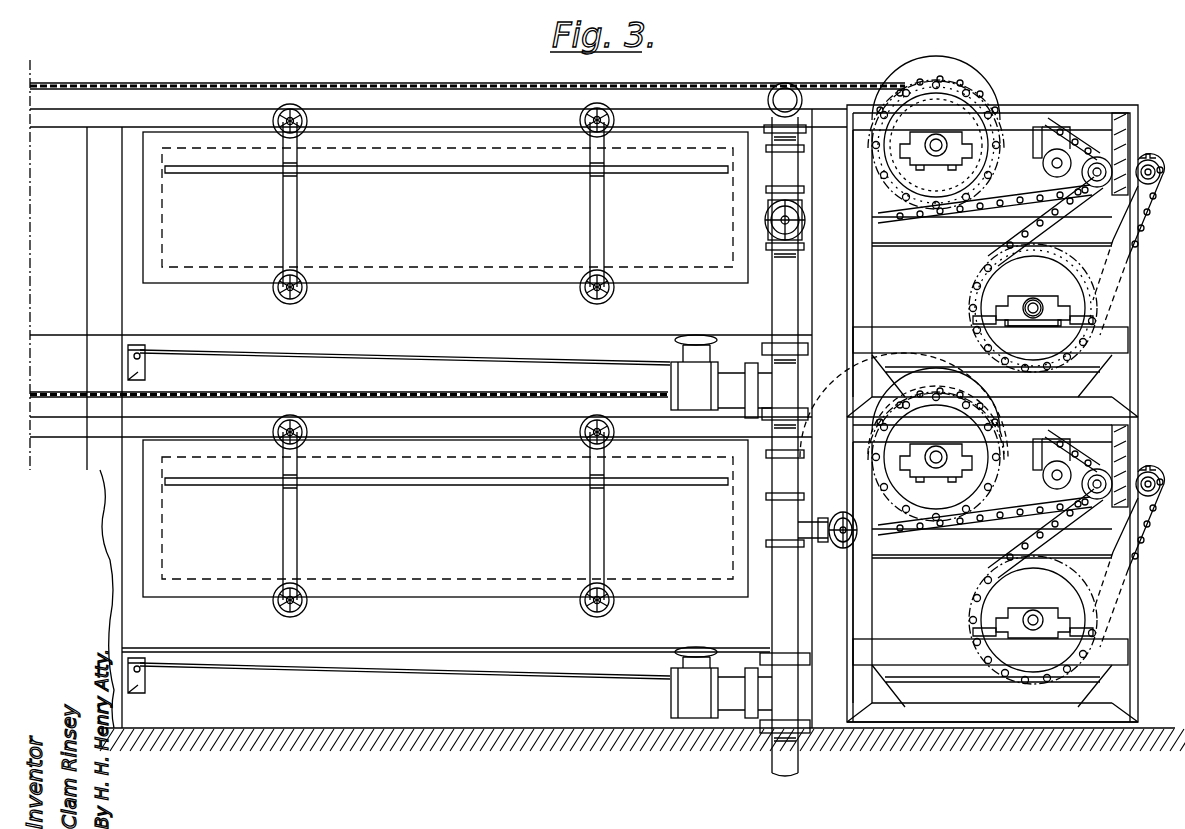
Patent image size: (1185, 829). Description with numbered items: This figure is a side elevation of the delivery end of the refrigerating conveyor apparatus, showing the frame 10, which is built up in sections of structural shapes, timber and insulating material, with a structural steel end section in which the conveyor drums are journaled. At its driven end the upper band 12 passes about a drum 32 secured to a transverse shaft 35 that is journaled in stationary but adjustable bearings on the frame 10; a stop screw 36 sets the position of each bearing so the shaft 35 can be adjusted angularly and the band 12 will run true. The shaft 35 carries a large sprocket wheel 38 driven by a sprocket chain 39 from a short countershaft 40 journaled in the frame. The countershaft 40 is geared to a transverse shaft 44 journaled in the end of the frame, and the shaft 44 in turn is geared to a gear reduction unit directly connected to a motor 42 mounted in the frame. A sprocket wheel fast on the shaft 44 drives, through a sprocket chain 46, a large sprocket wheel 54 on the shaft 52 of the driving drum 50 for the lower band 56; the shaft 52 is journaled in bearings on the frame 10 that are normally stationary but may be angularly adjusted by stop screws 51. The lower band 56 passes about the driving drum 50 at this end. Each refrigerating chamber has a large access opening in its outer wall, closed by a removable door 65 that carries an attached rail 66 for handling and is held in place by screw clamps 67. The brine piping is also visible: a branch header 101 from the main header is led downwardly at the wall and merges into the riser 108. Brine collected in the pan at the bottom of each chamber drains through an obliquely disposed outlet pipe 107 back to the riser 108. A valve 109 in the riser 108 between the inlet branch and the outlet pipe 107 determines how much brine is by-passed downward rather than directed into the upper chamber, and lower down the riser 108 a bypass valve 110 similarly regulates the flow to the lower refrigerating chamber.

The frame 10 is at (470, 618).
The band 12 is at (863, 82).
The drum 32 is at (936, 99).
The transverse shaft 35 is at (940, 142).
The stop screw 36 is at (893, 138).
The large sprocket wheel 38 is at (1003, 131).
The sprocket chain 39 is at (1065, 152).
The countershaft 40 is at (1097, 187).
The motor 42 is at (1038, 193).
The transverse shaft 44 is at (1149, 158).
The sprocket chain 46 is at (1146, 218).
The driving drum 50 is at (1003, 287).
The stop screws 51 is at (975, 319).
The shaft 52 is at (1042, 311).
The large sprocket wheel 54 is at (1095, 282).
The lower band 56 is at (397, 357).
The door 65 is at (203, 282).
The rail 66 is at (235, 172).
The screw clamps 67 is at (298, 107).
The branch header 101 is at (792, 87).
The outlet pipe 107 is at (676, 343).
The riser 108 is at (777, 298).
The valve 109 is at (765, 221).
The bypass valve 110 is at (842, 550).